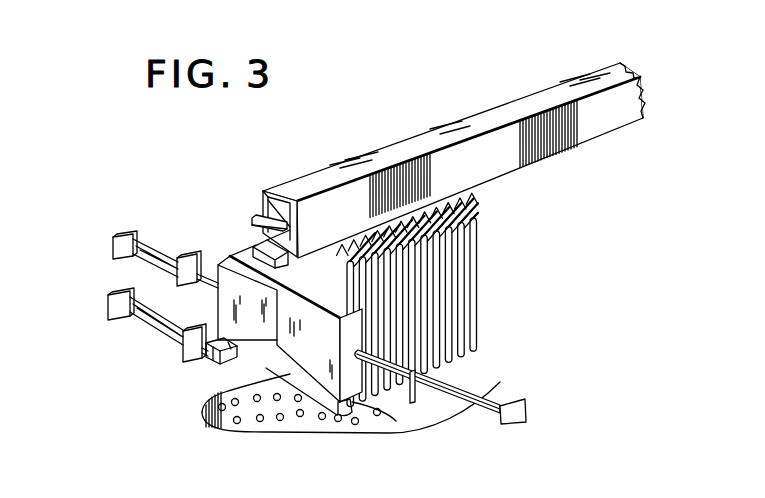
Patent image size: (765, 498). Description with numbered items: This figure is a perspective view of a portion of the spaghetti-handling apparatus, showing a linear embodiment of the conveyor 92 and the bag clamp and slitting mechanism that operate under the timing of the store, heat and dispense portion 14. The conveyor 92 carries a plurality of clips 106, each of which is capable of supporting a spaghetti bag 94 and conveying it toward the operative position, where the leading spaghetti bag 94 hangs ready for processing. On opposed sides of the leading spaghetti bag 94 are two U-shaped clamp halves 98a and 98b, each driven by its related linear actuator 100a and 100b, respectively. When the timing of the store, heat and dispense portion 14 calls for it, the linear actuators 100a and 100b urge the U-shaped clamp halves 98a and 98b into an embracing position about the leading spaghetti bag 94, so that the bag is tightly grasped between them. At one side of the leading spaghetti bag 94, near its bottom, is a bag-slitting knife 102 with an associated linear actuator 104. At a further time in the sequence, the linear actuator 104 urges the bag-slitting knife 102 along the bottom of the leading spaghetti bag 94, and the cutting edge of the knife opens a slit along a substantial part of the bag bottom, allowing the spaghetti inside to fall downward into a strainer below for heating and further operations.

The store, heat and dispense portion 14 is at (513, 67).
The conveyor 92 is at (408, 154).
The spaghetti bag 94 is at (288, 364).
The U-shaped clamp half 98a is at (240, 292).
The U-shaped clamp half 98b is at (308, 332).
The linear actuator 100a is at (143, 265).
The linear actuator 100b is at (473, 406).
The bag-slitting knife 102 is at (210, 367).
The linear actuator 104 is at (137, 330).
The clip 106 is at (460, 206).